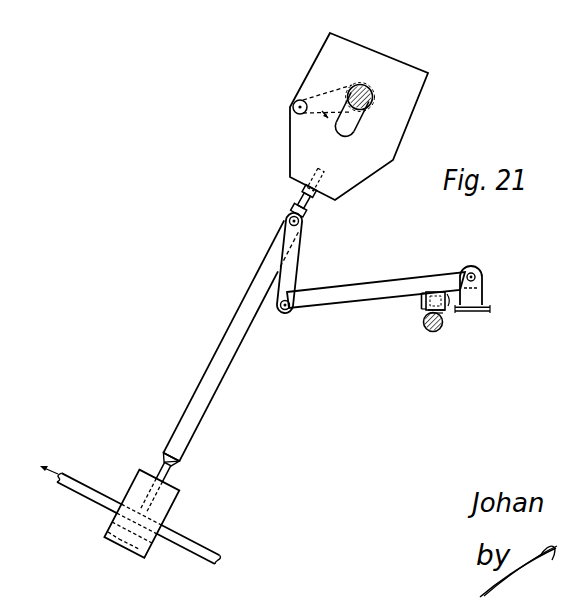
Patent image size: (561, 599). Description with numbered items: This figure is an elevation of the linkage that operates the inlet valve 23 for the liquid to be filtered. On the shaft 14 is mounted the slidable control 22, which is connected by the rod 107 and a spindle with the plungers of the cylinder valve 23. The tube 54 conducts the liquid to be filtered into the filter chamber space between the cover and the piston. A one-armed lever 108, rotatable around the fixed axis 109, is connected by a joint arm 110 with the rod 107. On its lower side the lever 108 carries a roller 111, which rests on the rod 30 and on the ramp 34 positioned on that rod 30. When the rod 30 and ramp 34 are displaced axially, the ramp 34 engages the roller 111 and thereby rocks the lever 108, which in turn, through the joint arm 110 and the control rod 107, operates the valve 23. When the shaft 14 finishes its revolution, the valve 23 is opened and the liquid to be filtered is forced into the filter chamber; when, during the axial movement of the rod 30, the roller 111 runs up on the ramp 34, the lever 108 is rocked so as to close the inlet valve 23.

The shaft 14 is at (370, 87).
The slidable control 22 is at (422, 88).
The inlet valve 23 is at (167, 495).
The rod 30 is at (438, 330).
The ramp 34 is at (438, 310).
The tube 54 is at (78, 483).
The rod 107 is at (225, 348).
The one-armed lever 108 is at (357, 295).
The fixed axis 109 is at (477, 272).
The joint arm 110 is at (297, 266).
The roller 111 is at (433, 295).